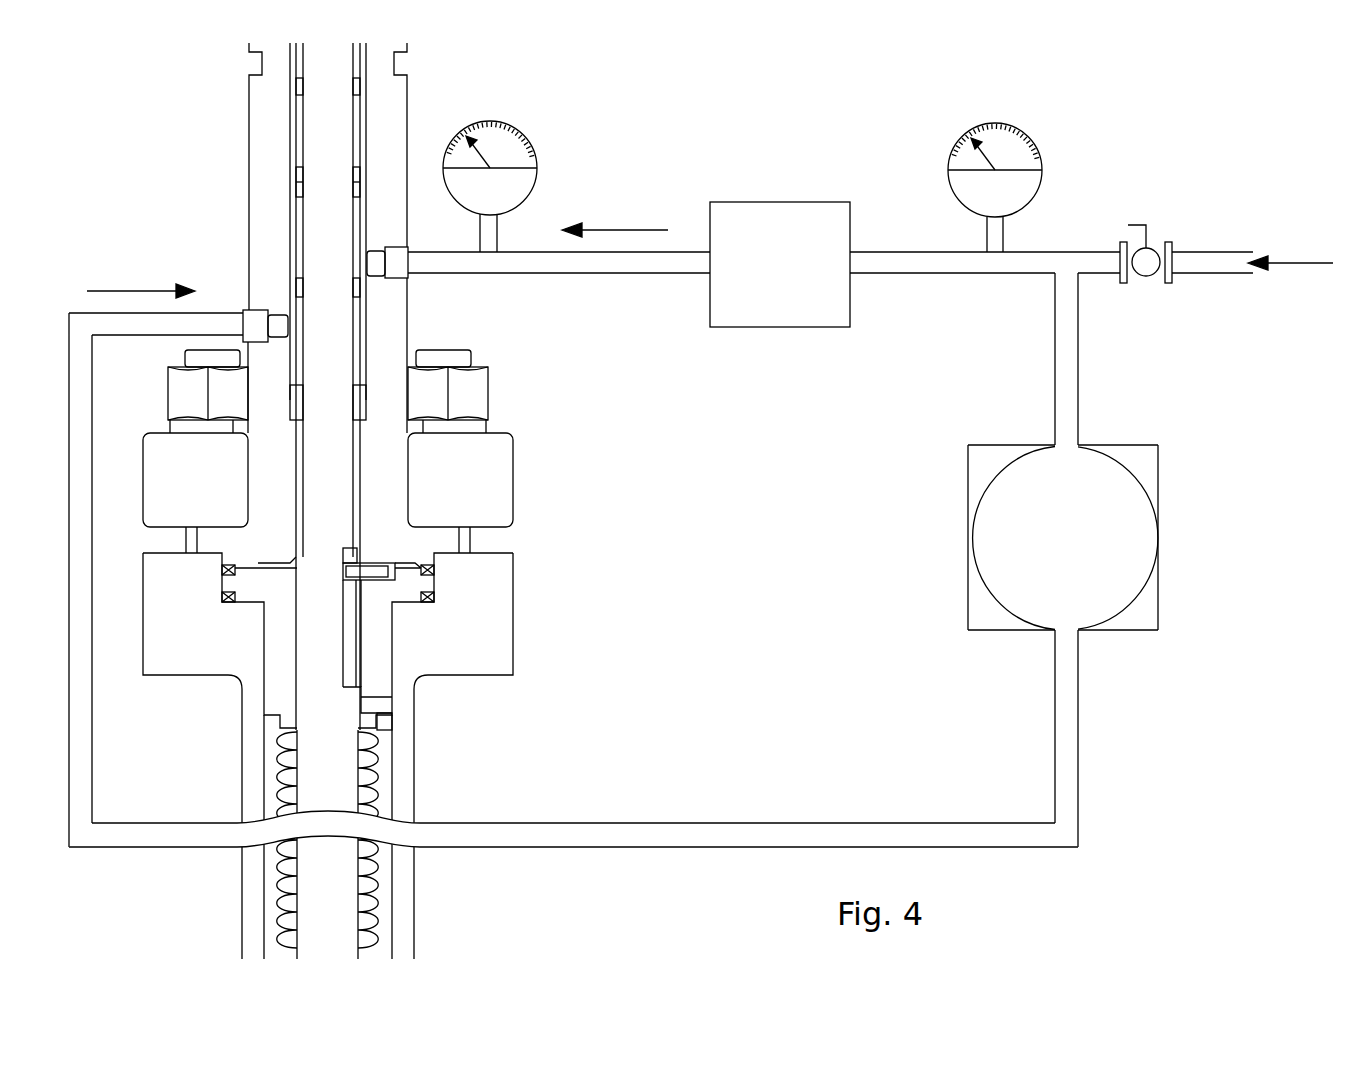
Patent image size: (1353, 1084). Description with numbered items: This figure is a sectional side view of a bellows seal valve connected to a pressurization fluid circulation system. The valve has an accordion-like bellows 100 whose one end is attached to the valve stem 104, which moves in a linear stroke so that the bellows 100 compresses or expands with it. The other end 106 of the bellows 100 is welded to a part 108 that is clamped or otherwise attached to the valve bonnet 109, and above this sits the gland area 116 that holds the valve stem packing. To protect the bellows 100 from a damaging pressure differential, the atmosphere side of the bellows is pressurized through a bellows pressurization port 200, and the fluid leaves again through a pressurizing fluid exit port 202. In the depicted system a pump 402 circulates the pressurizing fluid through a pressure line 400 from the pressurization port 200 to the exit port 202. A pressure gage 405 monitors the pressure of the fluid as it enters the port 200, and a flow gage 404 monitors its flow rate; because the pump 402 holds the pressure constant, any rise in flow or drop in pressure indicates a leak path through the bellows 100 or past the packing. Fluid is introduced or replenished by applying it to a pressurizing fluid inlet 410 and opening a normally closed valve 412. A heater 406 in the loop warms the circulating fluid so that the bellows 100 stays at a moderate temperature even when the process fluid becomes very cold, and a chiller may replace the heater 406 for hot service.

The bellows 100 is at (378, 920).
The valve stem 104 is at (351, 652).
The other end of the bellows 106 is at (285, 740).
The part 108 is at (275, 703).
The valve bonnet 109 is at (263, 168).
The gland area 116 is at (249, 100).
The bellows pressurization port 200 is at (425, 275).
The pressurizing fluid exit port 202 is at (238, 310).
The pressure line 400 is at (618, 823).
The pump 402 is at (1063, 537).
The flow gage 404 is at (1040, 155).
The pressure gage 405 is at (535, 155).
The heater 406 is at (775, 202).
The pressurizing fluid inlet 410 is at (1215, 252).
The normally closed valve 412 is at (1143, 278).